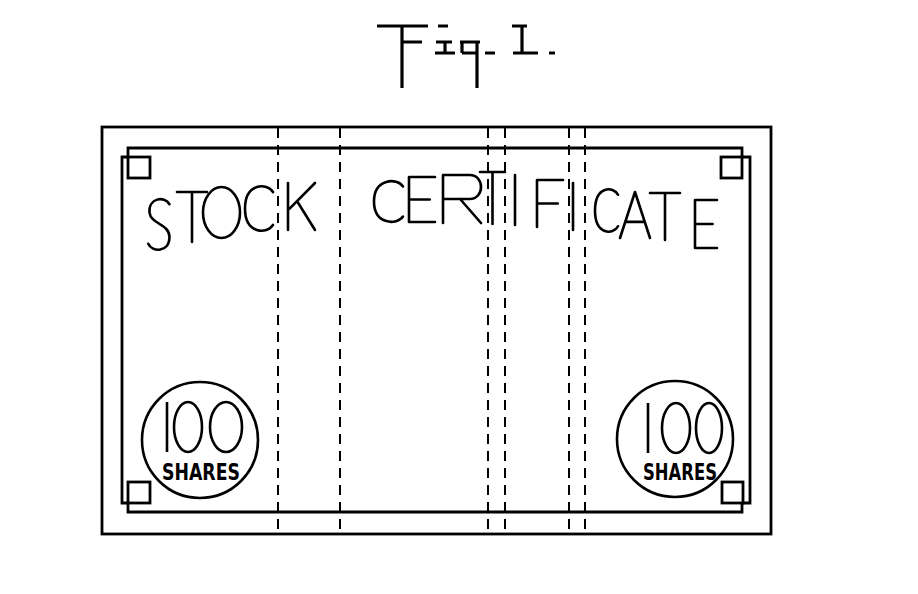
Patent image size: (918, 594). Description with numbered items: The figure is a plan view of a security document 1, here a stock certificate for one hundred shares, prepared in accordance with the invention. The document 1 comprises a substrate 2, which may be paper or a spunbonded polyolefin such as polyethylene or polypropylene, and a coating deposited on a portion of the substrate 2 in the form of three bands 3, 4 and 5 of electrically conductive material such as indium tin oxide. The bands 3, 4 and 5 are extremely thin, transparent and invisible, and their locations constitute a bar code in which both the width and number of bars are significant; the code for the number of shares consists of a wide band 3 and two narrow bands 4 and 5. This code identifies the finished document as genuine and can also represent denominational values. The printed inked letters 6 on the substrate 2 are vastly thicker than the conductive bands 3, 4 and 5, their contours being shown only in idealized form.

The security document 1 is at (778, 437).
The substrate 2 is at (823, 224).
The wide band 3 is at (338, 497).
The narrow band 4 is at (503, 500).
The narrow band 5 is at (582, 500).
The inked letters 6 is at (316, 222).